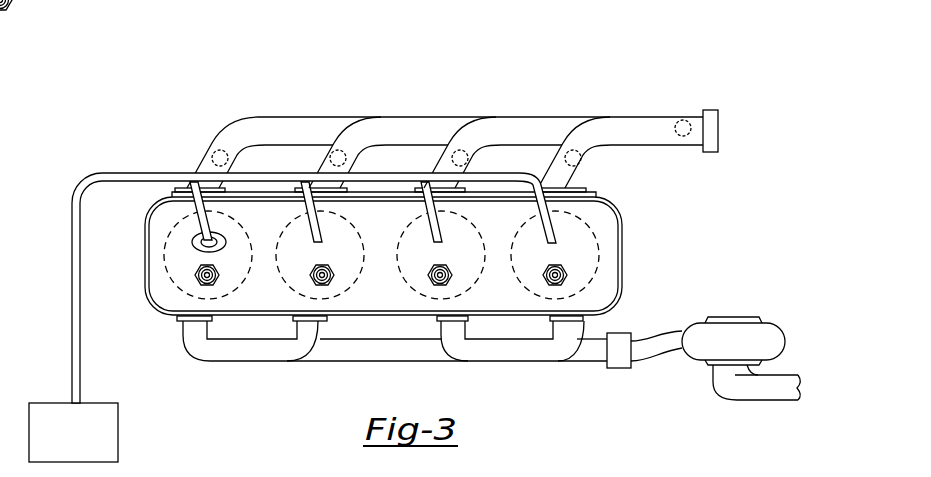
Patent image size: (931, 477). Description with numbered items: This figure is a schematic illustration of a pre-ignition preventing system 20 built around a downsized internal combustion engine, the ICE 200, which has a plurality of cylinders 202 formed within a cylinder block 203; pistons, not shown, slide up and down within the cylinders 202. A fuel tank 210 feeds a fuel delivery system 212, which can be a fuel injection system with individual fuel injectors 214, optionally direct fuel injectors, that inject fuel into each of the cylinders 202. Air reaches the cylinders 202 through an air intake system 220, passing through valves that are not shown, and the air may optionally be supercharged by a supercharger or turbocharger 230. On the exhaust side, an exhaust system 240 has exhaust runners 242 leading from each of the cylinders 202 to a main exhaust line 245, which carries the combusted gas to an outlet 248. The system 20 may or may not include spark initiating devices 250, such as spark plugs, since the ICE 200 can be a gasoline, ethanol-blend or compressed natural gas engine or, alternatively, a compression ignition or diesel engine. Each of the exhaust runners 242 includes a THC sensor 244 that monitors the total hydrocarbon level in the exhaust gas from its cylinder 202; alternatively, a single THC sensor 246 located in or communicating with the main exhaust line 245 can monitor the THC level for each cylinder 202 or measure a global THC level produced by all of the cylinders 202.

The system 20 is at (402, 231).
The downsized ICE 200 is at (343, 188).
The cylinders 202 is at (146, 300).
The cylinder block 203 is at (622, 247).
The fuel tank 210 is at (83, 438).
The fuel delivery system 212 is at (168, 170).
The fuel injectors 214 is at (315, 203).
The air intake system 220 is at (426, 364).
The supercharger or turbocharger 230 is at (767, 322).
The exhaust system 240 is at (482, 118).
The exhaust runners 242 is at (219, 133).
The THC sensor 244 is at (330, 158).
The main exhaust line 245 is at (633, 117).
The single THC sensor 246 is at (677, 118).
The outlet 248 is at (718, 128).
The spark initiating devices 250 is at (311, 276).